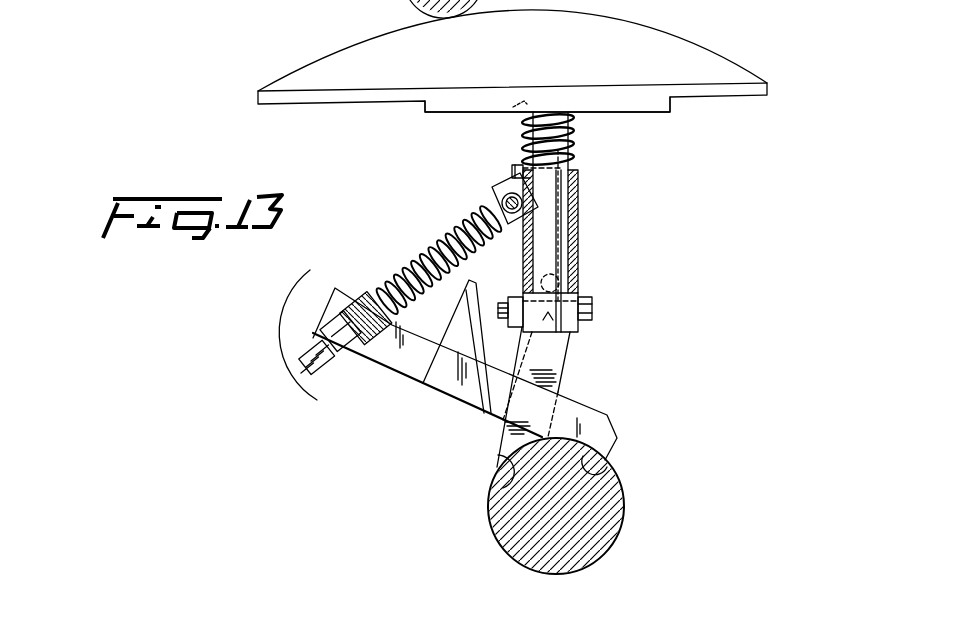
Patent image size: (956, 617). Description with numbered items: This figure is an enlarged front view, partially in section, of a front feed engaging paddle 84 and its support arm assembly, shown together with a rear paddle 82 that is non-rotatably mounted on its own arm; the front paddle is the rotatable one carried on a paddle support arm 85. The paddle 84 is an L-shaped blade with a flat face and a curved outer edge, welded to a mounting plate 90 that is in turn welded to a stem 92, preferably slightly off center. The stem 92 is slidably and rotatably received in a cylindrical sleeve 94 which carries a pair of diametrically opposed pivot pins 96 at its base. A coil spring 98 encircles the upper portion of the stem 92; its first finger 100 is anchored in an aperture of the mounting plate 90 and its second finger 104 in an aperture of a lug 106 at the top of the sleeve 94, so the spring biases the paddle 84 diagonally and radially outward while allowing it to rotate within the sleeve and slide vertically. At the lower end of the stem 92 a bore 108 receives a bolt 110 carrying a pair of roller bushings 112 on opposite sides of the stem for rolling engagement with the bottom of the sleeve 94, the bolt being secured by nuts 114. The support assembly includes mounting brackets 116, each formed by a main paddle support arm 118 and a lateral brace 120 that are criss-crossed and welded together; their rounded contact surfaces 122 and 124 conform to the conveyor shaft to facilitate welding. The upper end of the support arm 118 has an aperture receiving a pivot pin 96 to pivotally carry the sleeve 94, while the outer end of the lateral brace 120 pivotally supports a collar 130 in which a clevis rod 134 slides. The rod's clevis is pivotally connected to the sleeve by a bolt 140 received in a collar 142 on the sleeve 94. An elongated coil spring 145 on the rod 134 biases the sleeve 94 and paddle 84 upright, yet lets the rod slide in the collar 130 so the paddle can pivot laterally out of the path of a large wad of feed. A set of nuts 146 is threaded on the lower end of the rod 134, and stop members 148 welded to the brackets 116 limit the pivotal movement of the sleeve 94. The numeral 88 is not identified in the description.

The feed engaging paddle 82 is at (607, 533).
The feed engaging paddle 84 is at (676, 52).
The paddle support arm 85 is at (678, 258).
The mounting plate 88 is at (317, 67).
The mounting plate 90 is at (658, 106).
The stem 92 is at (558, 183).
The cylindrical sleeve 94 is at (578, 212).
The pivot pins 96 is at (555, 278).
The coil spring 98 is at (575, 138).
The first finger 100 is at (500, 114).
The second finger 104 is at (517, 180).
The lug 106 is at (512, 168).
The bore 108 is at (563, 333).
The bolt 110 is at (592, 305).
The roller bushings 112 is at (580, 323).
The nuts 114 is at (520, 300).
The mounting bracket 116 is at (626, 406).
The main paddle support arm 118 is at (555, 375).
The lateral brace 120 is at (460, 392).
The rounded contact surface 122 is at (492, 492).
The rounded contact surface 124 is at (597, 467).
The collar 130 is at (370, 357).
The clevis rod 134 is at (373, 293).
The bolt 140 is at (530, 210).
The collar 142 is at (490, 198).
The elongated coil spring 145 is at (427, 253).
The nuts 146 is at (313, 335).
The stop members 148 is at (440, 377).